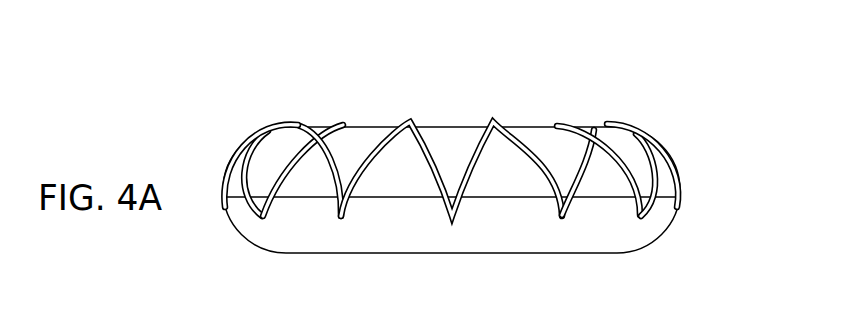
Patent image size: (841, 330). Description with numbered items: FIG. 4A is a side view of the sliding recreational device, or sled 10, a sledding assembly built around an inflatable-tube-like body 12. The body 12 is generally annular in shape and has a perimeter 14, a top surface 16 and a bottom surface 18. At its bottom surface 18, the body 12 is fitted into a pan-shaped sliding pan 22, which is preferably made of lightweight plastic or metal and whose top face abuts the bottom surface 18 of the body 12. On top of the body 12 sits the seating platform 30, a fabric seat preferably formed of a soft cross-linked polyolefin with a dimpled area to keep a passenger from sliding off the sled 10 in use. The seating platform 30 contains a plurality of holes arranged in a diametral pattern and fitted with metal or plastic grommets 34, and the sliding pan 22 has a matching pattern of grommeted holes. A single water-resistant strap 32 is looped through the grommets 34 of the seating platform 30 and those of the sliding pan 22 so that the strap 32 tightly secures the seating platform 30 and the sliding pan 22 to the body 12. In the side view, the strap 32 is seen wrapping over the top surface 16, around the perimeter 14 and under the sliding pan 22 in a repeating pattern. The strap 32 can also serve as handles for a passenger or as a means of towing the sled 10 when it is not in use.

The sled 10 is at (496, 160).
The body 12 is at (451, 186).
The perimeter 14 is at (632, 148).
The top surface 16 is at (310, 124).
The bottom surface 18 is at (602, 253).
The sliding pan 22 is at (372, 253).
The seating platform 30 is at (457, 132).
The strap 32 is at (678, 165).
The grommets 34 is at (642, 220).